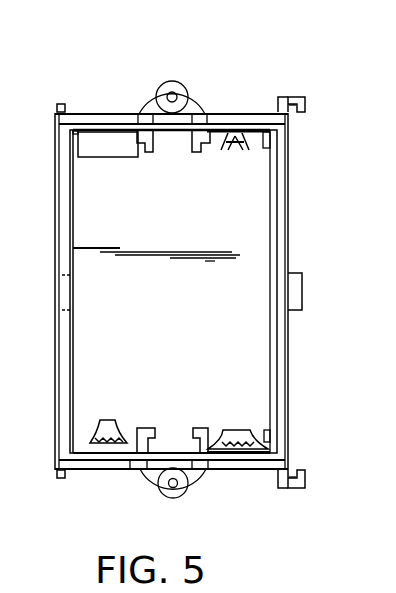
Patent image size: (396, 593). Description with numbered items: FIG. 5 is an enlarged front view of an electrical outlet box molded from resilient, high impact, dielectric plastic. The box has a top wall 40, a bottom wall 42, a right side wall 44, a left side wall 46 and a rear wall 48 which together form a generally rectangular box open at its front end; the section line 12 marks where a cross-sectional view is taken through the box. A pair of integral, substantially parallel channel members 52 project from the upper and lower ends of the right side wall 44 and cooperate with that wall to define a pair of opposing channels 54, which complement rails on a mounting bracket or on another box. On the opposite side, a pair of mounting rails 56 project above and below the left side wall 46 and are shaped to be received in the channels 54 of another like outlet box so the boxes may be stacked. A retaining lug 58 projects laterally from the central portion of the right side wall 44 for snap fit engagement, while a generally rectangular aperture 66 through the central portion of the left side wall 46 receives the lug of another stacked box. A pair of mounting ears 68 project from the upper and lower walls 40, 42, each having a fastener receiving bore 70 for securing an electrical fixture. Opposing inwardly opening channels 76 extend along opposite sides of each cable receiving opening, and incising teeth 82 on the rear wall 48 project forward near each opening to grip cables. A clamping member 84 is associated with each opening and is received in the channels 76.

The section line 12- 12 is at (107, 187).
The top wall 40 is at (226, 112).
The bottom wall 42 is at (240, 471).
The right side wall 44 is at (288, 233).
The left side wall 46 is at (55, 243).
The rear wall 48 is at (243, 363).
The channel member 52 is at (298, 95).
The channel 54 is at (294, 110).
The mounting rail 56 is at (58, 106).
The retaining lug 58 is at (300, 273).
The aperture 66 is at (67, 312).
The mounting ear 68 is at (182, 66).
The fastener receiving bore 70 is at (176, 481).
The channel 76 is at (208, 140).
The cable gripping teeth 82 is at (233, 137).
The clamping member 84 is at (122, 143).